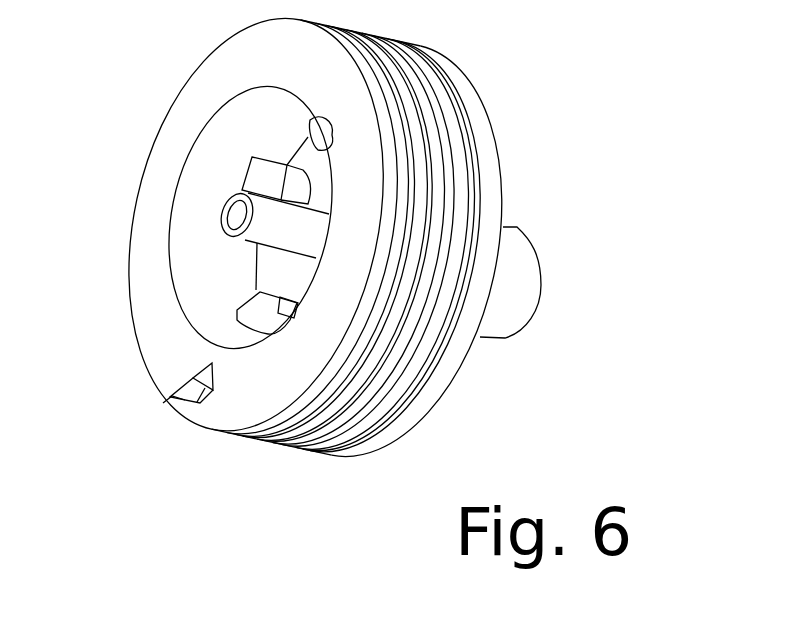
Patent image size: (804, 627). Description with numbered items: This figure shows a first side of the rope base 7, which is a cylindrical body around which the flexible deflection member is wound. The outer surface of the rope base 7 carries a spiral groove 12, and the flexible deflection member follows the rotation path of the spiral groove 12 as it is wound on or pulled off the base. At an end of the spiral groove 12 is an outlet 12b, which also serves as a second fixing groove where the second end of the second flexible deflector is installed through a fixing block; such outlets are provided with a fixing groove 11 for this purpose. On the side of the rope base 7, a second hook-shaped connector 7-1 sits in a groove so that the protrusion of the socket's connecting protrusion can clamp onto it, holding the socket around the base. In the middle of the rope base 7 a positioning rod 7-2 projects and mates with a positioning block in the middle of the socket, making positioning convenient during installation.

The rope base 7 is at (160, 193).
The second hook-shaped connector 7-1 is at (255, 175).
The positioning rod 7-2 is at (222, 226).
The fixing groove 11 is at (193, 380).
The spiral groove 12 is at (463, 137).
The outlet / second fixing groove 12b is at (170, 403).